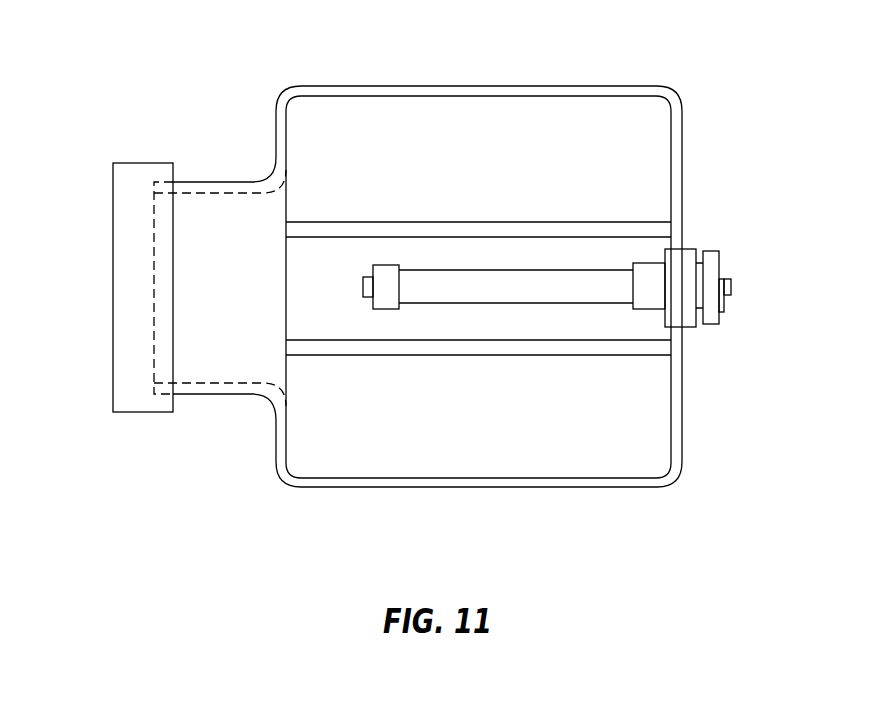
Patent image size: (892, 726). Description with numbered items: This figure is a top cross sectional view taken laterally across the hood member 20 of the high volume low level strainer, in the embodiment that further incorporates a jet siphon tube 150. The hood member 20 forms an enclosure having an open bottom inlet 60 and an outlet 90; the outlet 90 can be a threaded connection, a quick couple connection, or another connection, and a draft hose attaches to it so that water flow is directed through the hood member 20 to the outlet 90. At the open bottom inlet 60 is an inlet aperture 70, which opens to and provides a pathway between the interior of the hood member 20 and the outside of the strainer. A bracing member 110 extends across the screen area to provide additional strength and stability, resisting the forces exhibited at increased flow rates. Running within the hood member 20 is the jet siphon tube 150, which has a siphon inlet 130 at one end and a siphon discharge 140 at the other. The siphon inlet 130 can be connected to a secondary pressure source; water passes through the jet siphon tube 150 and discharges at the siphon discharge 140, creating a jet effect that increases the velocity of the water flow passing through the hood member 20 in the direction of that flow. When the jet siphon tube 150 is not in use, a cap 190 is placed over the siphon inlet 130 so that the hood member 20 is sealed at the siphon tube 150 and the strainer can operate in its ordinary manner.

The hood member 20 is at (697, 50).
The open bottom inlet 60 is at (368, 428).
The inlet aperture 70 is at (550, 442).
The outlet 90 is at (106, 287).
The bracing member 110 is at (553, 225).
The siphon inlet 130 is at (701, 278).
The siphon discharge 140 is at (363, 287).
The jet siphon tube 150 is at (470, 278).
The cap 190 is at (725, 310).